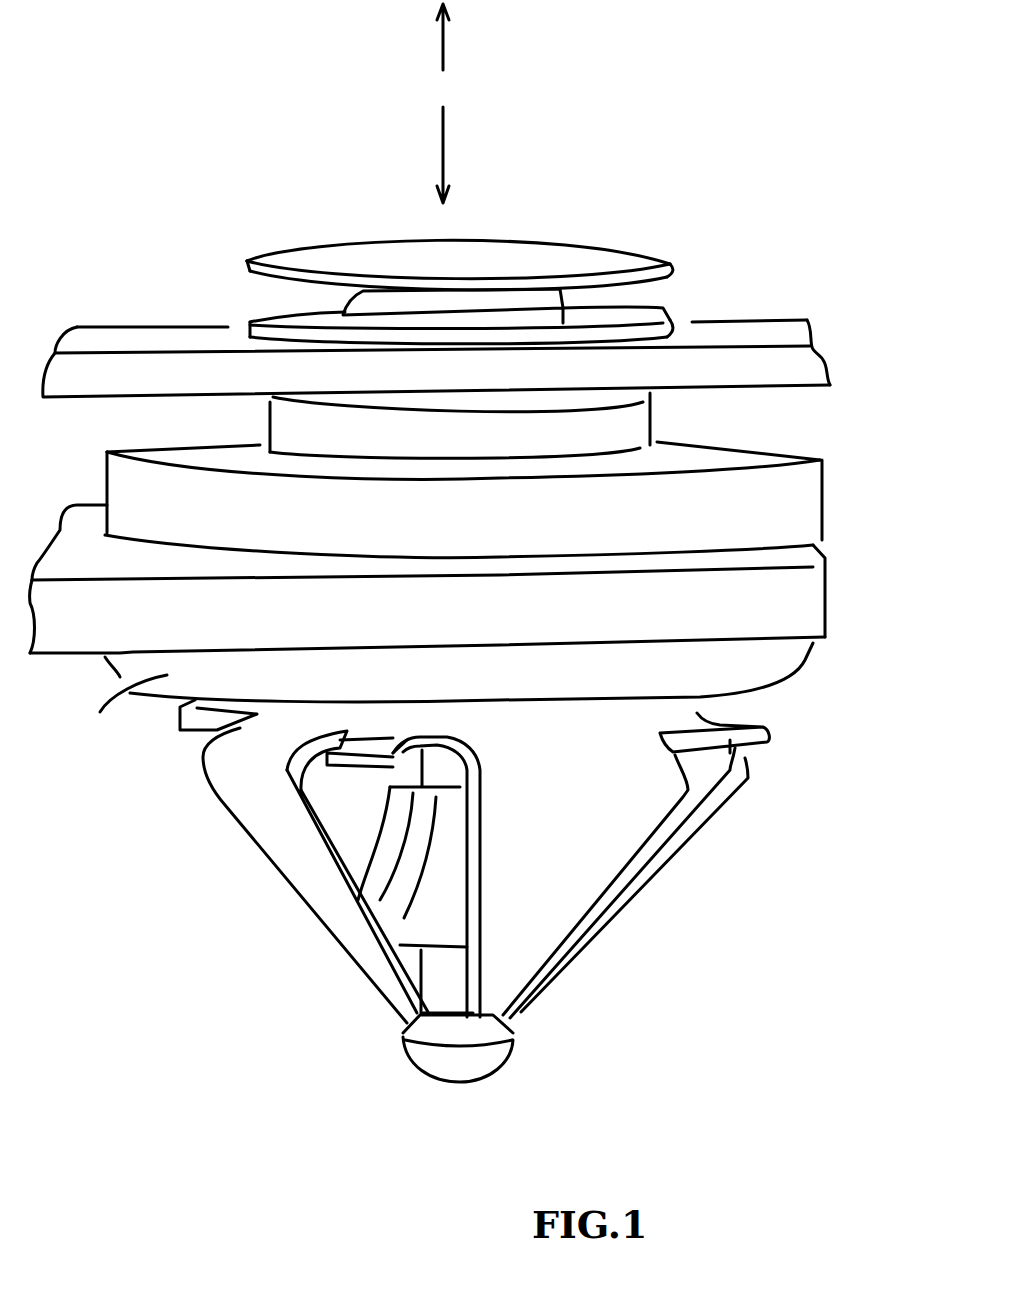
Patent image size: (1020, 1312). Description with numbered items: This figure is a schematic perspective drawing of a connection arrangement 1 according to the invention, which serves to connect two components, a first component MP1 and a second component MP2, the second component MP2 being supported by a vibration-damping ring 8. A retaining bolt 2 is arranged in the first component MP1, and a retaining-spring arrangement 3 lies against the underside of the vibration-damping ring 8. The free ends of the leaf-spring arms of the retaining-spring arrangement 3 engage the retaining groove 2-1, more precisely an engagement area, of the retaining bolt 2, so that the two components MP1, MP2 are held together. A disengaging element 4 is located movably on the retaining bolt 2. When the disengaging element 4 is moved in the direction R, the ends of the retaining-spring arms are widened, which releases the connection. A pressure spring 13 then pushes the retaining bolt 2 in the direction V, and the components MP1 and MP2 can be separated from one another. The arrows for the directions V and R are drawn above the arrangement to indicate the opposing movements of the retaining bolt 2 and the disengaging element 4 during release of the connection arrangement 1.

The connection arrangement 1 is at (443, 859).
The retaining bolt 2 is at (450, 1067).
The retaining groove 2-1 is at (400, 1028).
The retaining-spring arrangement 3 is at (288, 723).
The disengaging element 4 is at (428, 908).
The vibration-damping ring 8 is at (213, 520).
The pressure spring 13 is at (593, 267).
The first component MP1 is at (773, 335).
The second component MP2 is at (803, 605).
The direction V is at (458, 37).
The direction R is at (456, 155).